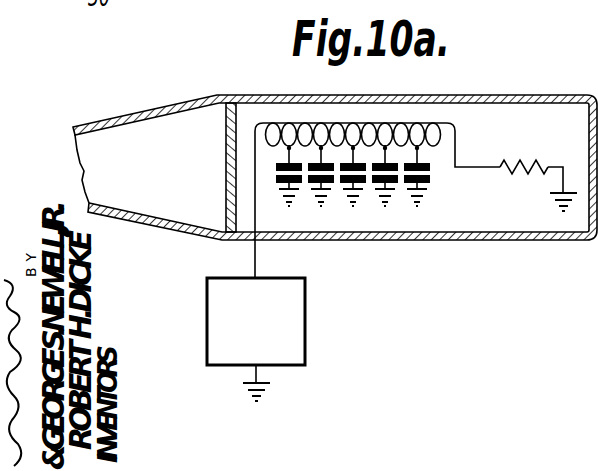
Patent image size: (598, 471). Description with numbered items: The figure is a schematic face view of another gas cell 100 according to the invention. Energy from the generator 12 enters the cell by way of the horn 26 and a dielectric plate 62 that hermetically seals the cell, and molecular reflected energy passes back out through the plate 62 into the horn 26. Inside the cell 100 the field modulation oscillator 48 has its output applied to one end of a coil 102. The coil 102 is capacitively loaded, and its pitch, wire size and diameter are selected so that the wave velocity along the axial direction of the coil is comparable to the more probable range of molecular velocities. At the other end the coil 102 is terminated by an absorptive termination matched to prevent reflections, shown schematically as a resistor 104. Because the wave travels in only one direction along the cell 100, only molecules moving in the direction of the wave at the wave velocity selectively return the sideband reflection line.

The horn 26 is at (160, 105).
The dielectric plate 62 is at (225, 140).
The gas cell 100 is at (273, 82).
The coil 102 is at (405, 182).
The resistor 104 is at (548, 146).
The field modulation oscillator 48 is at (305, 310).
The generator 12 is at (597, 347).